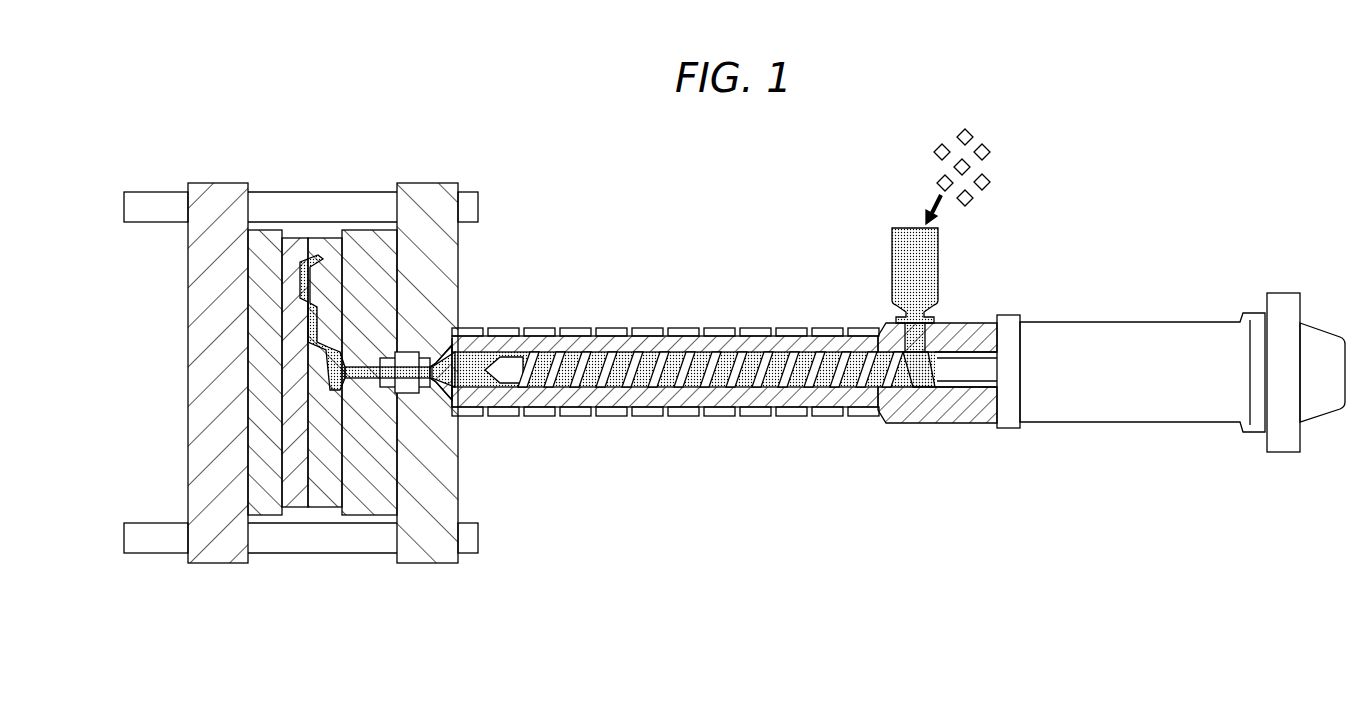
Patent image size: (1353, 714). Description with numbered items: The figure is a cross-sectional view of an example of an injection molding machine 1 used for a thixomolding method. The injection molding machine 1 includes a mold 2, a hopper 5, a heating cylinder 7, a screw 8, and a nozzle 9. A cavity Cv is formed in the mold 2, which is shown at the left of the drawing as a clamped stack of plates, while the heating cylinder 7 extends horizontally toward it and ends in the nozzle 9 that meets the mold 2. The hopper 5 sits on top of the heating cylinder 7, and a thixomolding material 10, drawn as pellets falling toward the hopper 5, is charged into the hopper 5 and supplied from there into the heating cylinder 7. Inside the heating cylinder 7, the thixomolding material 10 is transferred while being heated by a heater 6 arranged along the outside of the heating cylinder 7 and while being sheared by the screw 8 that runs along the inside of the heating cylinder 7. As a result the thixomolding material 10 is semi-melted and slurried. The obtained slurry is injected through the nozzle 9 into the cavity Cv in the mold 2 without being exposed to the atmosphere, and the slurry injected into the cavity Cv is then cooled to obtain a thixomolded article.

The injection molding machine 1 is at (1198, 222).
The mold 2 is at (276, 582).
The hopper 5 is at (914, 227).
The heater 6 is at (796, 415).
The heating cylinder 7 is at (720, 415).
The screw 8 is at (507, 364).
The nozzle 9 is at (428, 392).
The thixomolding material 10 is at (1000, 163).
The cavity Cv is at (303, 262).